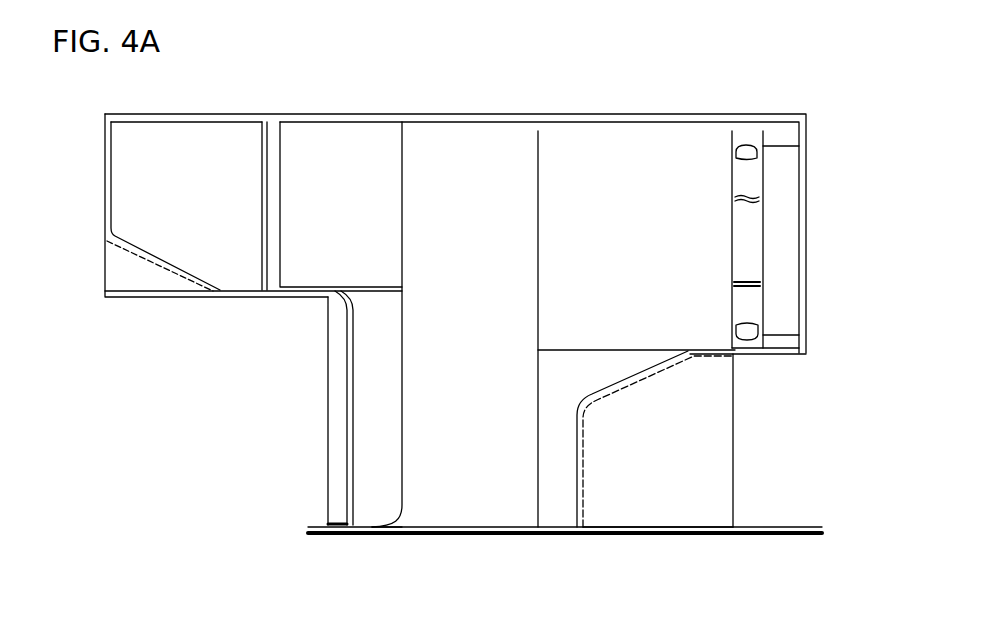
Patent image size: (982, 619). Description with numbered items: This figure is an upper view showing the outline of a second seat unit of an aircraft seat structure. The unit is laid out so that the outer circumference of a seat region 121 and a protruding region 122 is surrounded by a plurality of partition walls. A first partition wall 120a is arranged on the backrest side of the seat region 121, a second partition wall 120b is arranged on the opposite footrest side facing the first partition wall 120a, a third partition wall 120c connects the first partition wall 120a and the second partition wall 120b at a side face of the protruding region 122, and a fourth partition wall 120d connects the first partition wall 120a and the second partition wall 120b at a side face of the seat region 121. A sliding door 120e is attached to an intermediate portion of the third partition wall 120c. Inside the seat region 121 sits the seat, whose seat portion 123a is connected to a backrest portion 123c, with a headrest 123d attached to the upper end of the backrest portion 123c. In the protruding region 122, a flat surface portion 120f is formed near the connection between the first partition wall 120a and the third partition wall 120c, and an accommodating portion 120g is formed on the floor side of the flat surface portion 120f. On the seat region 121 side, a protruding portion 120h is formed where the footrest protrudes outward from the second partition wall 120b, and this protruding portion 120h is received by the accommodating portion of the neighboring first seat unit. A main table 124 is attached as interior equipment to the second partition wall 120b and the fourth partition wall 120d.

The first partition wall 120a is at (733, 411).
The second partition wall 120b is at (328, 380).
The third partition wall 120c is at (498, 538).
The fourth partition wall 120d is at (497, 114).
The sliding door 120e is at (397, 538).
The flat surface portion 120f is at (638, 495).
The accommodating portion 120g is at (760, 494).
The protruding portion 120h is at (137, 190).
The seat region 121 is at (847, 114).
The protruding region 122 is at (847, 353).
The seat portion 123a is at (673, 137).
The backrest portion 123c is at (747, 343).
The headrest 123d is at (747, 243).
The main table 124 is at (388, 199).